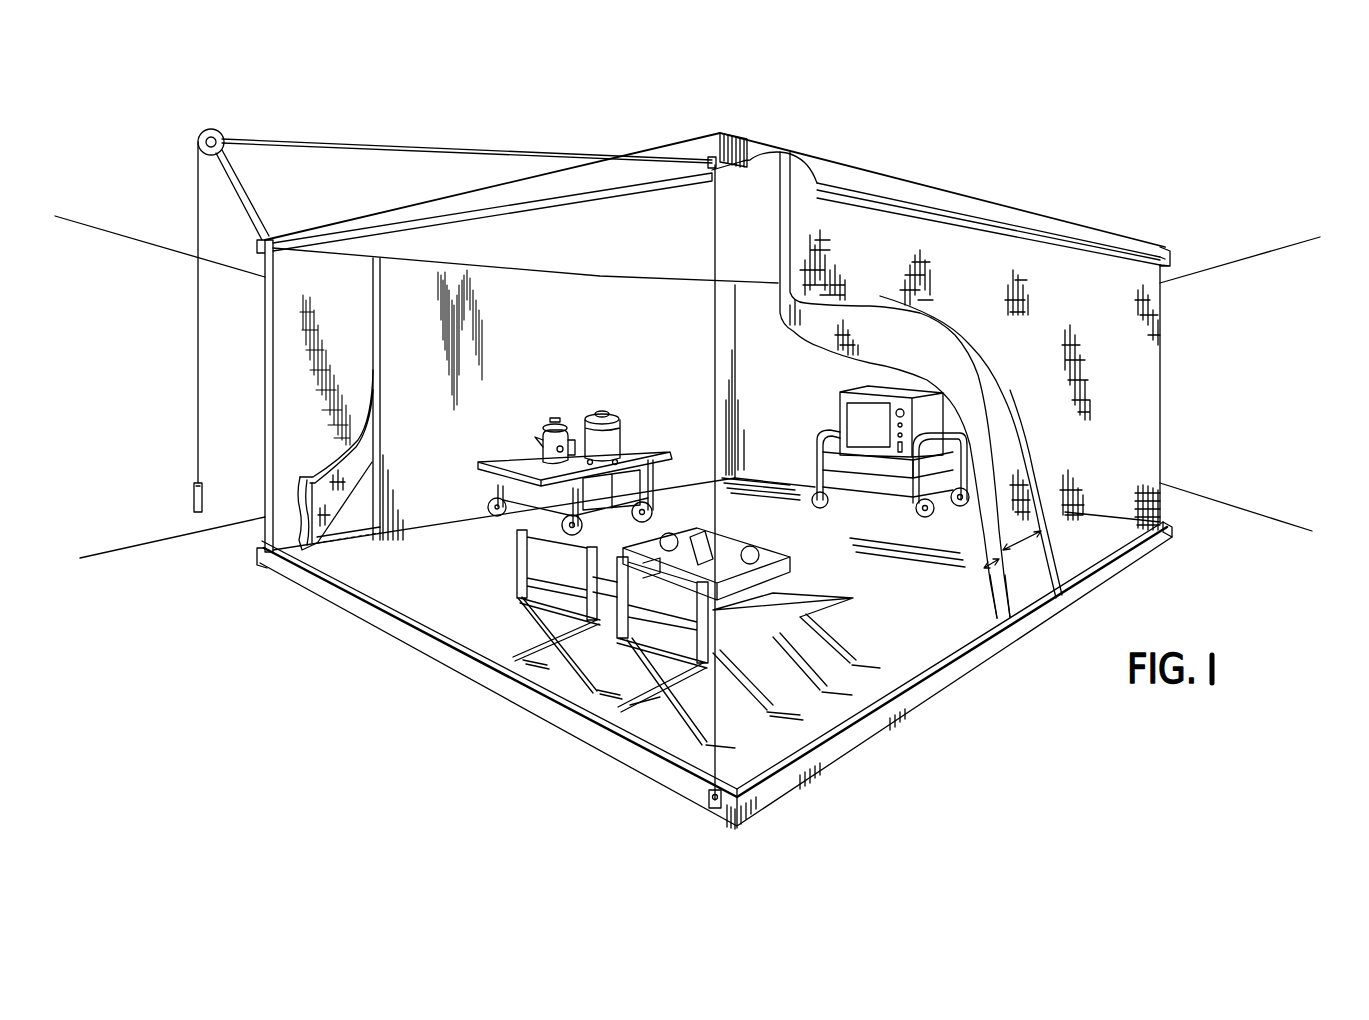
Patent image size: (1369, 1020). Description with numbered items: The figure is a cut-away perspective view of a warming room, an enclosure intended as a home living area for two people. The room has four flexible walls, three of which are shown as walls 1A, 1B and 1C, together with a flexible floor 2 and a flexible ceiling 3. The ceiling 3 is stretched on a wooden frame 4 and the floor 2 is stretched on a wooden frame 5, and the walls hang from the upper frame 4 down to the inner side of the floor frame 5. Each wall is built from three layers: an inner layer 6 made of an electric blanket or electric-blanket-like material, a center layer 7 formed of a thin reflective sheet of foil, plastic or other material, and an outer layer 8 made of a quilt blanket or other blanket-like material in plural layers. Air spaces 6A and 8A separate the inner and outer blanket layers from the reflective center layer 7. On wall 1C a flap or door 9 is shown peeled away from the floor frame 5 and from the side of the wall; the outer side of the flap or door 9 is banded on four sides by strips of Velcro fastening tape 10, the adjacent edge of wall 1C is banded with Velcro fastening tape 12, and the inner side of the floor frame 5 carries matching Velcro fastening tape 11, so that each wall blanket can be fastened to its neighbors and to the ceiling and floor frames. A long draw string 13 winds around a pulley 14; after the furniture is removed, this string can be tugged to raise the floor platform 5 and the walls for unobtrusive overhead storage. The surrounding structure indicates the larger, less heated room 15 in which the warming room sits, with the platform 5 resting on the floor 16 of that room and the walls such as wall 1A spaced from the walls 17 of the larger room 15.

The flexible wall 1A is at (1130, 380).
The flexible wall 1B is at (752, 297).
The flexible wall 1C is at (545, 300).
The flexible floor 2 is at (879, 633).
The flexible ceiling 3 is at (660, 217).
The wooden frame 4 is at (1166, 250).
The wooden frame 5 is at (1172, 531).
The inner layer 6 is at (990, 592).
The air space 6A is at (984, 578).
The center layer 7 is at (1020, 607).
The outer layer 8 is at (1048, 508).
The air space 8A is at (1050, 532).
The flap or door 9 is at (292, 383).
The Velcro fastening tape 10 is at (303, 540).
The Velcro fastening tape 11 is at (351, 535).
The Velcro fastening tape 12 is at (380, 487).
The draw string 13 is at (415, 148).
The pulley 14 is at (218, 128).
The larger room 15 is at (143, 222).
The floor 16 is at (180, 558).
The walls 17 is at (112, 375).